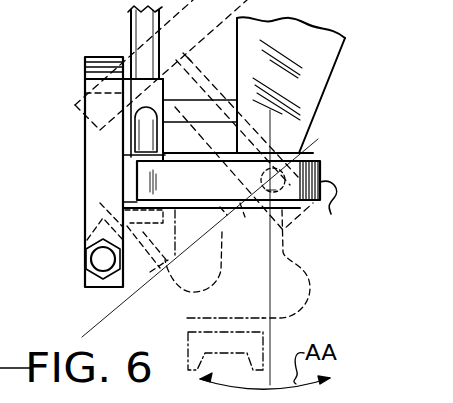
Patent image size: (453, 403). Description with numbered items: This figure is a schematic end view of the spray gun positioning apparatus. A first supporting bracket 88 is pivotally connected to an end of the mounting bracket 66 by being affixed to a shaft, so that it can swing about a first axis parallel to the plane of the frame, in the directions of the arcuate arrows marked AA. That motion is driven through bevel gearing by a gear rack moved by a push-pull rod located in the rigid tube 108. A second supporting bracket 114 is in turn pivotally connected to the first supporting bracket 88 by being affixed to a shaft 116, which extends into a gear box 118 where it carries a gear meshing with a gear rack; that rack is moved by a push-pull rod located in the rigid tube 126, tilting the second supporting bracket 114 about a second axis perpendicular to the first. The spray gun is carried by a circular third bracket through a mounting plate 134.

The mounting bracket 66 is at (312, 122).
The first supporting bracket 88 is at (222, 210).
The rigid tube 108 is at (131, 12).
The second supporting bracket 114 is at (332, 211).
The shaft 116 is at (134, 182).
The gear box 118 is at (85, 137).
The rigid tube 126 is at (90, 263).
The mounting plate 134 is at (180, 318).